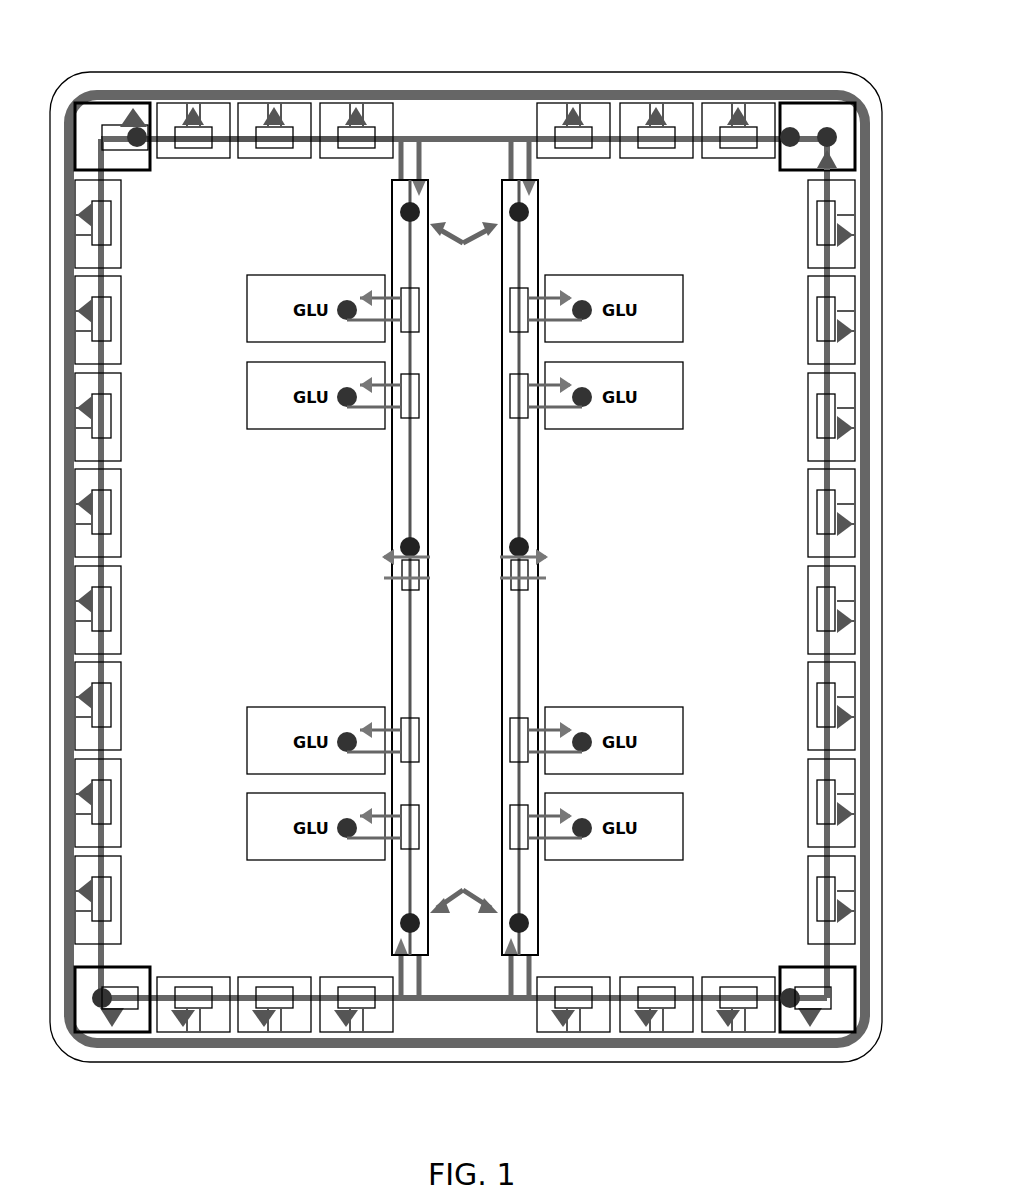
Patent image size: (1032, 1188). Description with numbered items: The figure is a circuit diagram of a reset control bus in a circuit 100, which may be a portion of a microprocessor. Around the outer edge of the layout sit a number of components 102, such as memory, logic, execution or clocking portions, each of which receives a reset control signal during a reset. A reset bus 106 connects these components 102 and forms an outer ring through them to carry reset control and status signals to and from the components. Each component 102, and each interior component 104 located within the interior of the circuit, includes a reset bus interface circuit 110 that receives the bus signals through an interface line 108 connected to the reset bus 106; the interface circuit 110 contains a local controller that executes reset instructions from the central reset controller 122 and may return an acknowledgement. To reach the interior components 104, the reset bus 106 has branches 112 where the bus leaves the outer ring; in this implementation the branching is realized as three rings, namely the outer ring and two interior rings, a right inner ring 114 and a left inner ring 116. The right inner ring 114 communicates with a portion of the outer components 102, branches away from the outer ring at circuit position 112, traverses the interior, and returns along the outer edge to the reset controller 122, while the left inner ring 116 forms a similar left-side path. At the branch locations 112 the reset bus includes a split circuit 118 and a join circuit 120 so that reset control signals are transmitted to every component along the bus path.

The circuit 100 is at (272, 46).
The component 102 is at (125, 170).
The interior component 104 is at (247, 300).
The reset bus 106 is at (615, 105).
The interface line 108 is at (745, 123).
The reset bus interface circuit 110 is at (372, 140).
The branch 112 is at (405, 96).
The right inner ring 114 is at (520, 507).
The left inner ring 116 is at (410, 515).
The split circuit 118 is at (464, 258).
The join circuit 120 is at (464, 877).
The reset controller 122 is at (835, 152).